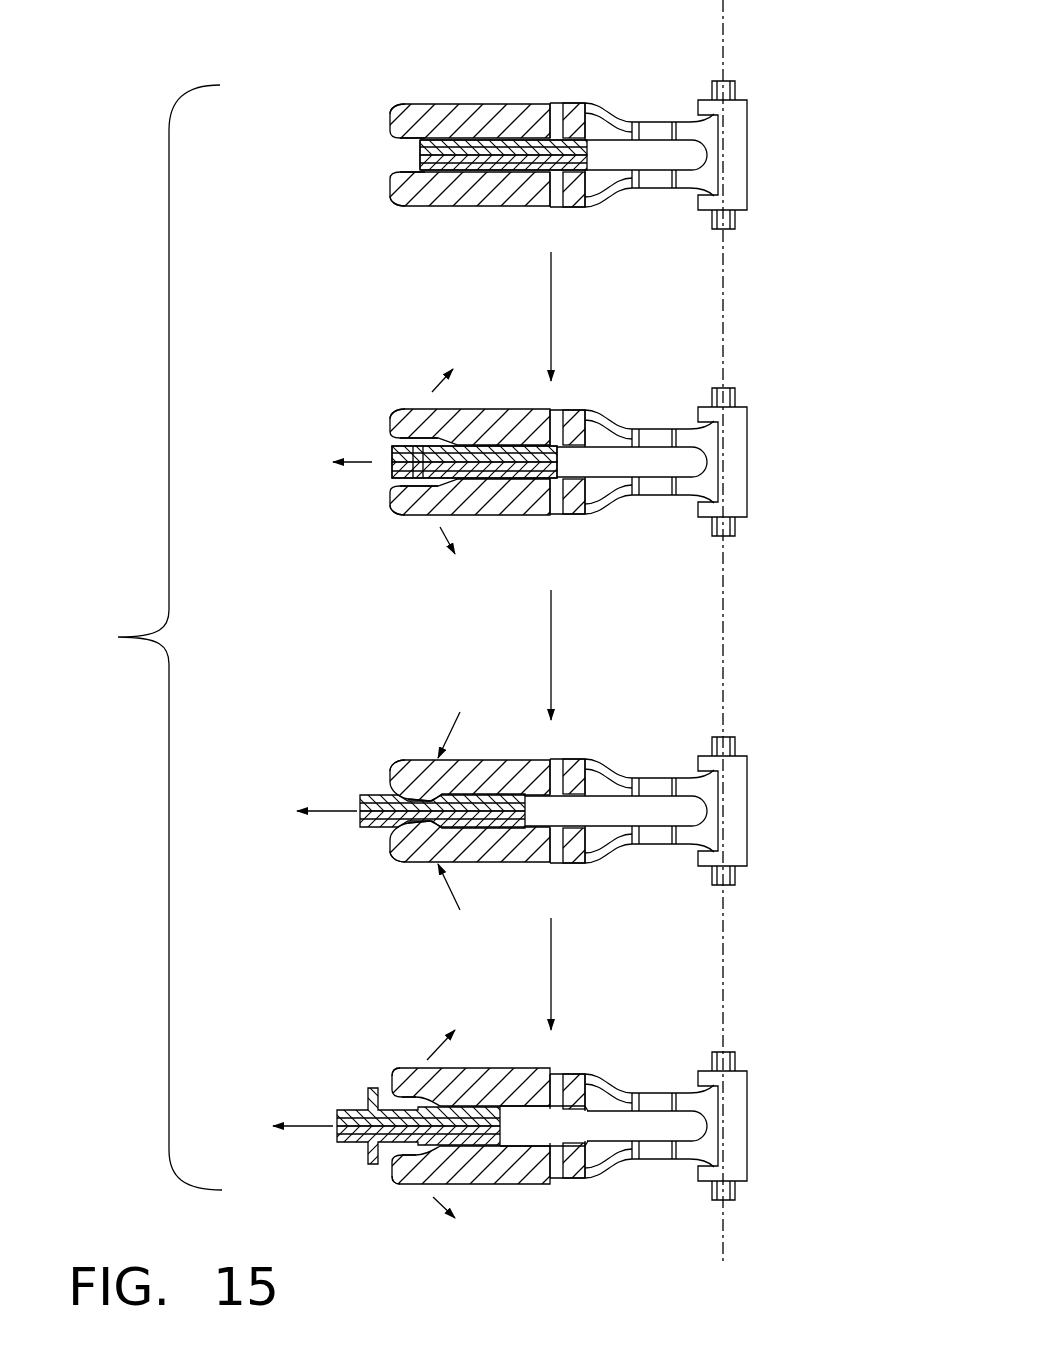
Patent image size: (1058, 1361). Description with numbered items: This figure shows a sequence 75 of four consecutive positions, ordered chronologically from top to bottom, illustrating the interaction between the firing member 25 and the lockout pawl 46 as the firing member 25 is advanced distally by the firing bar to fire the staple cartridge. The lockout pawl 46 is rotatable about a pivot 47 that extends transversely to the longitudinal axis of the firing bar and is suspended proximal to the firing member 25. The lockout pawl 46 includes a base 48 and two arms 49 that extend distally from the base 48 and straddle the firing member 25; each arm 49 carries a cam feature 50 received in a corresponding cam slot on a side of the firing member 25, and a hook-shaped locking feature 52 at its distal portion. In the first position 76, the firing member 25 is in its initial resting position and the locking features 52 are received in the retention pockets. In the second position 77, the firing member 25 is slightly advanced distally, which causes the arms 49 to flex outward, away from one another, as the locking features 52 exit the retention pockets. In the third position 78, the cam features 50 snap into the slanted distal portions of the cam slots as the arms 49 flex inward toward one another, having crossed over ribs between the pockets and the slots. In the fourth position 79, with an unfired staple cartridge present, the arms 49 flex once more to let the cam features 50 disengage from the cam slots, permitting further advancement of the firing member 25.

The sequence 75 is at (118, 637).
The first position 76 is at (405, 63).
The second position 77 is at (414, 343).
The third position 78 is at (418, 716).
The fourth position 79 is at (423, 1026).
The firing member 25 is at (553, 150).
The lockout pawl 46 is at (632, 122).
The pivot 47 is at (731, 82).
The base 48 is at (735, 153).
The arms 49 is at (472, 103).
The cam feature 50 is at (420, 171).
The locking feature 52 is at (388, 190).